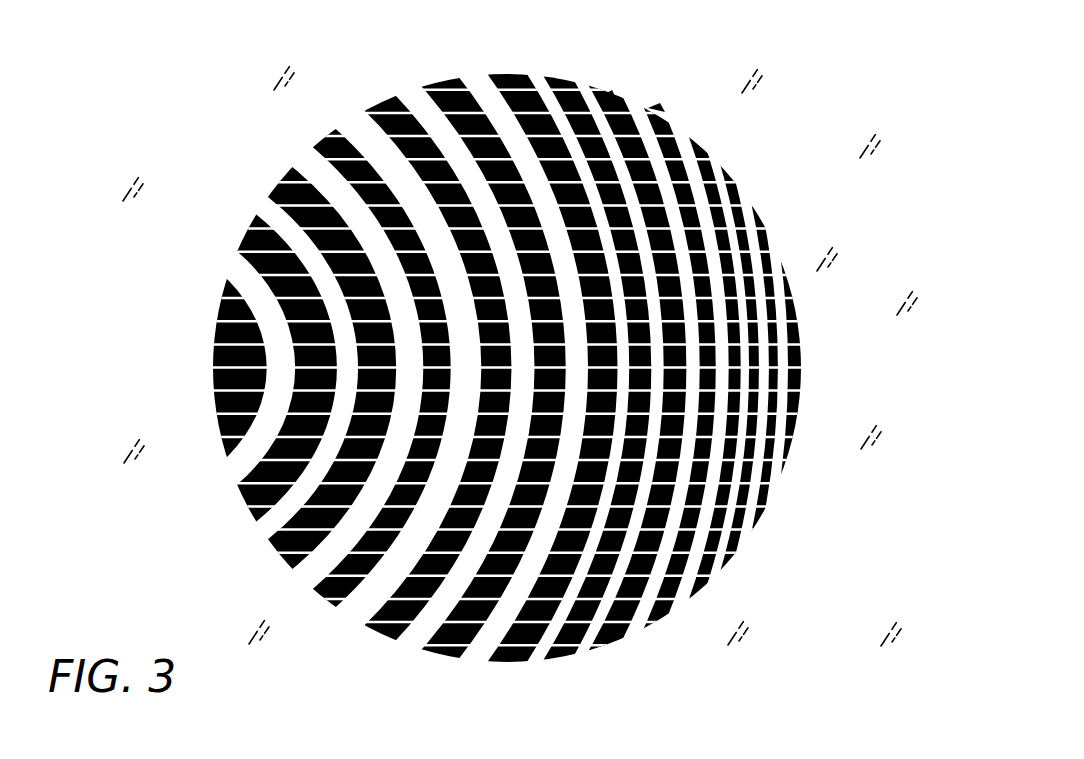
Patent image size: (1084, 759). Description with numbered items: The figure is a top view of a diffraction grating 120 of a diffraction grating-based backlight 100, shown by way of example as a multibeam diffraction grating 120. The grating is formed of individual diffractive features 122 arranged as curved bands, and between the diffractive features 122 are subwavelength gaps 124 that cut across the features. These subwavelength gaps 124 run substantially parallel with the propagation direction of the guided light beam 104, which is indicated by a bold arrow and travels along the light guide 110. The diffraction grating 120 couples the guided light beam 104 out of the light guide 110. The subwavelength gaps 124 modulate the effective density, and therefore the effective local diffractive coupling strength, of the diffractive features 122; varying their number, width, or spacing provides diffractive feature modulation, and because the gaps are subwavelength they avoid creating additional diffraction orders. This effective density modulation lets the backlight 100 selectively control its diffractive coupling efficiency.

The diffraction grating-based backlight 100 is at (520, 368).
The guided light beam 104 is at (872, 368).
The light guide 110 is at (895, 564).
The diffraction grating 120 is at (480, 368).
The diffractive features 122 is at (617, 116).
The subwavelength gaps 124 is at (672, 112).